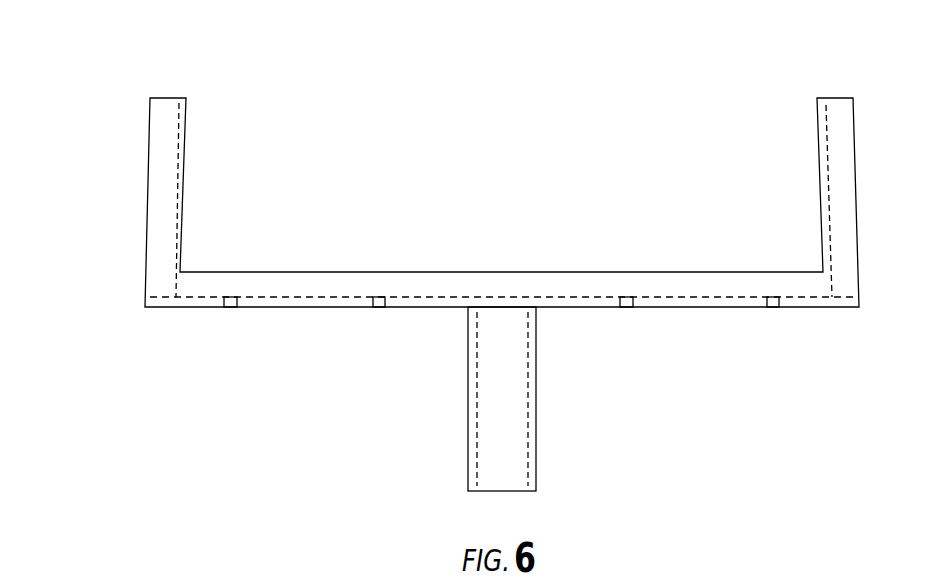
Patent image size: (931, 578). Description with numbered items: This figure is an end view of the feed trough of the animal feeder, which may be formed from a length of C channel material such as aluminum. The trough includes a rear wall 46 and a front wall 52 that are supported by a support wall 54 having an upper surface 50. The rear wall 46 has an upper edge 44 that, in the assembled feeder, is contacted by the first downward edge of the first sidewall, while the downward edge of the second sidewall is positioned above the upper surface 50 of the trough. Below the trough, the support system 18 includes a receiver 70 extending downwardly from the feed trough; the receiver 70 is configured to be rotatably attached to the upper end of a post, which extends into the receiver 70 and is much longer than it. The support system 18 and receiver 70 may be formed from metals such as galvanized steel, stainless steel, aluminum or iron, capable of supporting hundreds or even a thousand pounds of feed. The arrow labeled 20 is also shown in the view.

The support system 18 is at (415, 425).
The second direction arrow 20 is at (428, 462).
The upper edge 44 is at (163, 97).
The rear wall 46 is at (168, 168).
The upper surface 50 is at (482, 272).
The front wall 52 is at (843, 175).
The support wall 54 is at (574, 286).
The receiver 70 is at (468, 360).